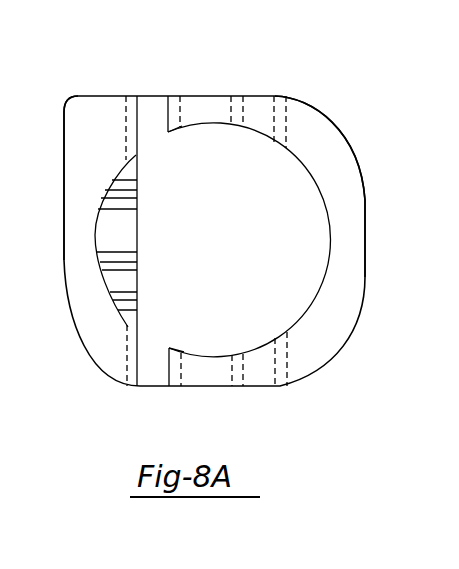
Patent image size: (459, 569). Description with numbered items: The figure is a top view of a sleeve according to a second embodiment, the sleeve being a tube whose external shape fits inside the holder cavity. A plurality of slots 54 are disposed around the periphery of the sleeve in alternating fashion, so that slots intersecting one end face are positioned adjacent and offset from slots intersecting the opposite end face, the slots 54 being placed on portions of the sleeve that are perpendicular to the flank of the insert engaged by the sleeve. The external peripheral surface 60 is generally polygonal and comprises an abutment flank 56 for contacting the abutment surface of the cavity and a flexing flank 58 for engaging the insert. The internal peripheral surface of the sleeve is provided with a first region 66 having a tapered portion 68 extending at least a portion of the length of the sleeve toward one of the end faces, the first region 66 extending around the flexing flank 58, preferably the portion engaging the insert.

The slots 54 is at (152, 112).
The abutment flank 56 is at (365, 218).
The flexing flank 58 is at (64, 238).
The external peripheral surface 60 is at (325, 115).
The first region 66 is at (93, 120).
The tapered portion 68 is at (118, 232).